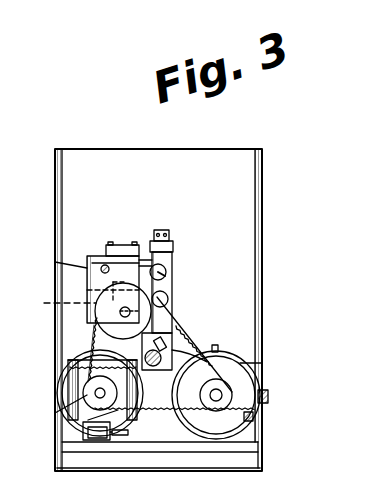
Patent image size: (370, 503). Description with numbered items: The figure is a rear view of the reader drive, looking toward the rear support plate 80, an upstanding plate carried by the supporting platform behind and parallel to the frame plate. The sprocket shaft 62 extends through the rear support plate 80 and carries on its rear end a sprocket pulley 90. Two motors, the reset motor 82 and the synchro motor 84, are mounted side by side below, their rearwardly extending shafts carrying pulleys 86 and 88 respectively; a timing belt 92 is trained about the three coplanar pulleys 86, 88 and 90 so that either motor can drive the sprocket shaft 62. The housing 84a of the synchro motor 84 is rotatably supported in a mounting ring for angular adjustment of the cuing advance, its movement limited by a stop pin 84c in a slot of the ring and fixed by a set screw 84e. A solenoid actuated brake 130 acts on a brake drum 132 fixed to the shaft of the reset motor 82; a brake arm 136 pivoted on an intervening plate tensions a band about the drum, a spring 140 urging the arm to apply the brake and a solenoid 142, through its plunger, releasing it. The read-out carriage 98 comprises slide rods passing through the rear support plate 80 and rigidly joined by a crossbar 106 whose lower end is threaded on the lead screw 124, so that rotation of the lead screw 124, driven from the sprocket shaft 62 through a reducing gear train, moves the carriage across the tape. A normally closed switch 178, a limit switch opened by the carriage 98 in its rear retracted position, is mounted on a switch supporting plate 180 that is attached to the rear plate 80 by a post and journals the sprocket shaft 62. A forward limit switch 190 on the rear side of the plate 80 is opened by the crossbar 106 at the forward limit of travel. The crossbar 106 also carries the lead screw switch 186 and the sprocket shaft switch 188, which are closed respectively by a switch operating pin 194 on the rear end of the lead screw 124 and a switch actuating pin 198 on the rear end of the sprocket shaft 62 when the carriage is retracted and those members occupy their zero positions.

The rear support plate 80 is at (55, 170).
The reset motor 82 is at (57, 388).
The synchro motor 84 is at (253, 418).
The motor housing 84a is at (220, 432).
The stop pin 84c is at (238, 352).
The set screw 84e is at (268, 397).
The pulley 86 is at (82, 421).
The pulley 88 is at (215, 402).
The sprocket pulley 90 is at (86, 325).
The timing belt 92 is at (218, 344).
The carriage 98 is at (167, 268).
The crossbar 106 is at (170, 289).
The lead screw 124 is at (162, 388).
The solenoid actuated brake 130 is at (97, 438).
The brake drum 132 is at (55, 413).
The brake arm 136 is at (158, 455).
The spring 140 is at (74, 381).
The solenoid 142 is at (85, 441).
The normally closed switch 178 is at (128, 229).
The switch supporting plate 180 is at (55, 262).
The lead screw switch 186 is at (178, 333).
The sprocket shaft switch 188 is at (87, 289).
The forward limit switch 190 is at (170, 239).
The switch operating pin 194 is at (262, 364).
The switch actuating pin 198 is at (53, 303).
The sprocket shaft 62 is at (123, 311).